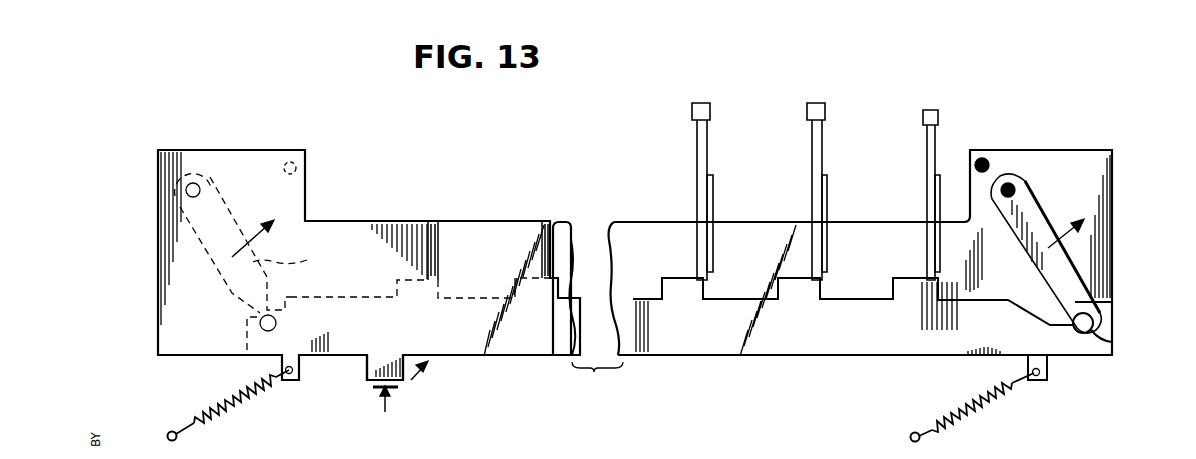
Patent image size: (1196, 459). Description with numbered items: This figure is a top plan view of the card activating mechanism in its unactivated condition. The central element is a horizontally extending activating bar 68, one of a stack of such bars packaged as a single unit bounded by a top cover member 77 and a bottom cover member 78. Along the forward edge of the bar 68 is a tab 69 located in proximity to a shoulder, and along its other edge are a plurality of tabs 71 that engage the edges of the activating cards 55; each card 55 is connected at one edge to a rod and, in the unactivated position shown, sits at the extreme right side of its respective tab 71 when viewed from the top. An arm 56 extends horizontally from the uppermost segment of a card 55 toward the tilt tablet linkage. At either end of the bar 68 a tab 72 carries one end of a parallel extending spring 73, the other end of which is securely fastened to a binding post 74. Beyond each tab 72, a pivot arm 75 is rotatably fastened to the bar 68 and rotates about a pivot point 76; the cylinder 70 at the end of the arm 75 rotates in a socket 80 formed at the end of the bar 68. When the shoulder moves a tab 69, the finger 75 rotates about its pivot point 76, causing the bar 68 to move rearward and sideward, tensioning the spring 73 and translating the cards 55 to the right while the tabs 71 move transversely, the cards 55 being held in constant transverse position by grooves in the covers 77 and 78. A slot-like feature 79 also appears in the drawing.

The card 55 is at (697, 164).
The arm 56 is at (713, 185).
The bar 68 is at (745, 357).
The tab 69 is at (372, 382).
The cylinder 70 is at (1094, 320).
The tab 71 is at (665, 280).
The tab 72 is at (293, 374).
The spring 73 is at (232, 396).
The binding post 74 is at (176, 440).
The pivot arm 75 is at (1124, 275).
The pivot point 76 is at (200, 186).
The top cover member 77 is at (362, 234).
The bottom cover member 78 is at (666, 208).
The slot 79 is at (433, 224).
The socket 80 is at (1100, 340).